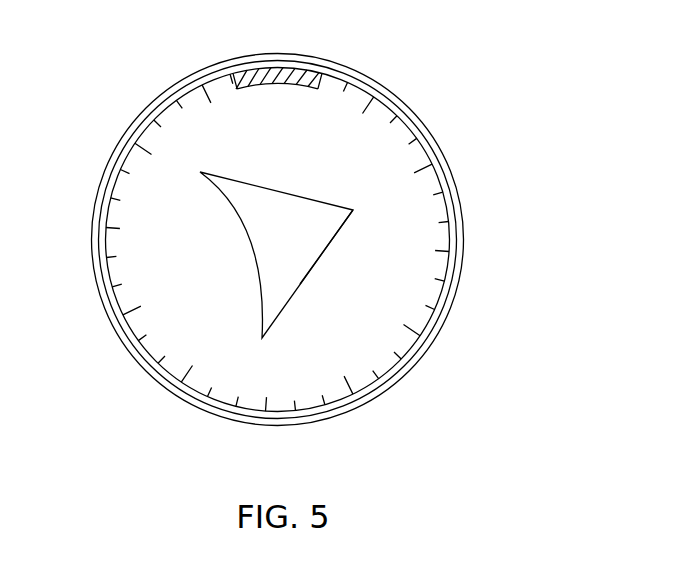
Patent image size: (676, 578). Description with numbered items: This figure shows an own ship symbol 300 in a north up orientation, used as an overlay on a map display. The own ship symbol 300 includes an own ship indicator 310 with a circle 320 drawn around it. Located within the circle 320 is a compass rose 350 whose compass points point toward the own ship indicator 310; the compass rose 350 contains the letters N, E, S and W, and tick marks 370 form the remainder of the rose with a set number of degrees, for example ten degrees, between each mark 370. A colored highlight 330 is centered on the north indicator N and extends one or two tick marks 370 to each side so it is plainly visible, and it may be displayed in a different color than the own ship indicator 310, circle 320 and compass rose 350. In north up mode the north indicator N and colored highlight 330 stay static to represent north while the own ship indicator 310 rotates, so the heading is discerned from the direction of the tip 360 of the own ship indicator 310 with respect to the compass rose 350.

The own ship symbol 300 is at (320, 218).
The own ship indicator 310 is at (259, 302).
The circle 320 is at (455, 297).
The colored highlight 330 is at (238, 72).
The compass rose 350 is at (371, 118).
The tip 360 is at (353, 212).
The tick marks 370 is at (438, 195).